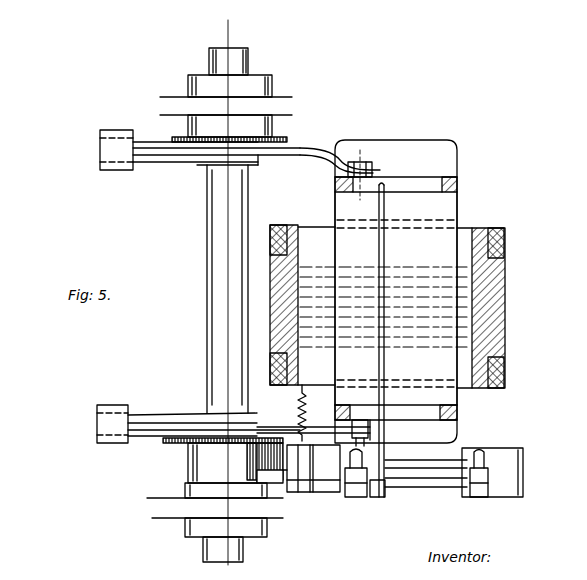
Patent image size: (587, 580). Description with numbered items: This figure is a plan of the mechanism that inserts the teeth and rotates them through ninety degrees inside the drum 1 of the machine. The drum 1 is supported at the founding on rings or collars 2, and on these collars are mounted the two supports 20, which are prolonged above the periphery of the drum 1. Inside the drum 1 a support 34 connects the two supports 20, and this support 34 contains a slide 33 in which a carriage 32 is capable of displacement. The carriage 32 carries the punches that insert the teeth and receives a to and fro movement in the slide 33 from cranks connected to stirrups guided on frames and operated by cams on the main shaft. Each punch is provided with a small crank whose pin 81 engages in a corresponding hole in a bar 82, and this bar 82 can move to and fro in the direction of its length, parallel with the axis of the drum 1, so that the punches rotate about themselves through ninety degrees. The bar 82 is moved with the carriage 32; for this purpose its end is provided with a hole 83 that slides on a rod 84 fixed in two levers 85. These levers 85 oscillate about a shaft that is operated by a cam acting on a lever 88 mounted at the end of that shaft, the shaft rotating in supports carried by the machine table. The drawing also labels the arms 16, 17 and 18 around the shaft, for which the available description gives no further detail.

The drum 1 is at (500, 290).
The rings or collars 2 is at (279, 222).
The arm 16 is at (298, 155).
The upper arm 17 is at (148, 144).
The lower arm 18 is at (116, 412).
The supports 20 is at (402, 145).
The carriage 32 is at (335, 202).
The slide 33 is at (404, 176).
The support 34 is at (459, 206).
The pin 81 is at (253, 468).
The bar 82 is at (385, 249).
The hole 83 is at (385, 492).
The rod 84 is at (444, 490).
The levers 85 is at (355, 498).
The lever 88 is at (292, 494).